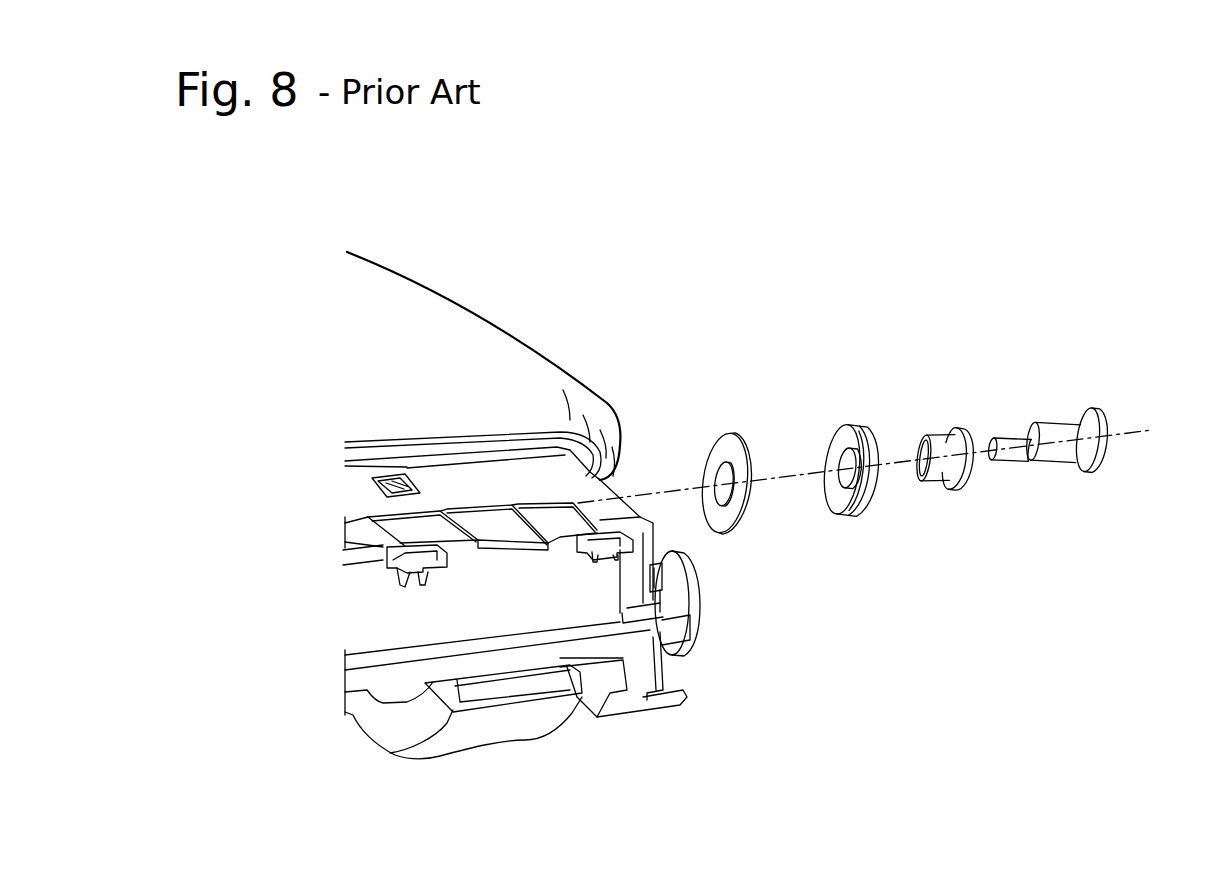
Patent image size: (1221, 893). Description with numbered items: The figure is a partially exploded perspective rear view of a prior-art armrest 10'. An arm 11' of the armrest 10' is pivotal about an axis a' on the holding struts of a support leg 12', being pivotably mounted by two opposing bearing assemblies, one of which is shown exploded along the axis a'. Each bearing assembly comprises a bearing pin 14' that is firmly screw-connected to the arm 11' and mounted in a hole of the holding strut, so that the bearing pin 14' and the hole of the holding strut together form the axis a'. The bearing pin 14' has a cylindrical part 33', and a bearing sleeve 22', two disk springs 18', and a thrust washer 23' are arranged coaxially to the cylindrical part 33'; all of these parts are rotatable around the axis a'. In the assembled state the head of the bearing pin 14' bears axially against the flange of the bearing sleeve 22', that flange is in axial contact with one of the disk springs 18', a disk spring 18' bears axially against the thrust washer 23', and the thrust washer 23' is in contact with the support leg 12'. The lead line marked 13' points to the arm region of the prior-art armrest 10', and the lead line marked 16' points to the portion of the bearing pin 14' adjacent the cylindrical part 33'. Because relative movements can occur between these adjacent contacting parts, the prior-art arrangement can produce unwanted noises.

The armrest 10' is at (663, 149).
The arm 11' is at (574, 391).
The support leg 12' is at (442, 595).
The cover panel edge 13' is at (483, 341).
The bearing pin 14' is at (1079, 346).
The pin 16' is at (1007, 507).
The disk springs 18' is at (853, 458).
The bearing sleeve 22' is at (944, 368).
The thrust washer 23' is at (727, 402).
The cylindrical part 33' is at (1071, 503).
The axis a' is at (889, 421).